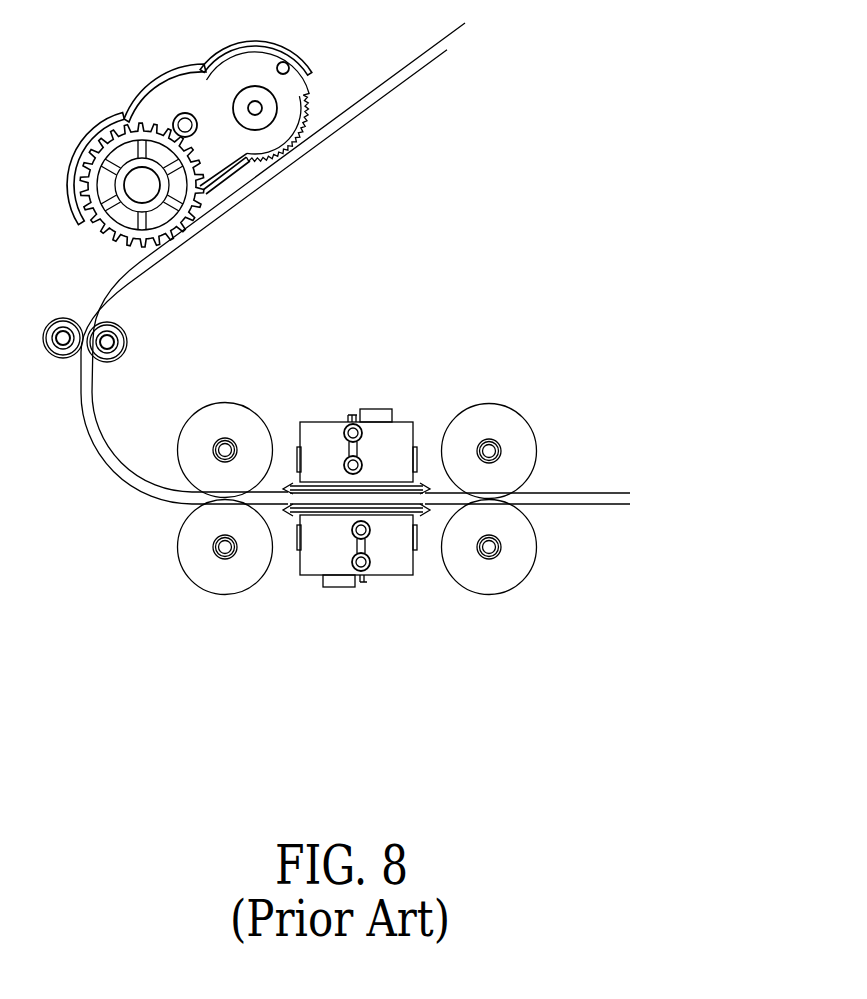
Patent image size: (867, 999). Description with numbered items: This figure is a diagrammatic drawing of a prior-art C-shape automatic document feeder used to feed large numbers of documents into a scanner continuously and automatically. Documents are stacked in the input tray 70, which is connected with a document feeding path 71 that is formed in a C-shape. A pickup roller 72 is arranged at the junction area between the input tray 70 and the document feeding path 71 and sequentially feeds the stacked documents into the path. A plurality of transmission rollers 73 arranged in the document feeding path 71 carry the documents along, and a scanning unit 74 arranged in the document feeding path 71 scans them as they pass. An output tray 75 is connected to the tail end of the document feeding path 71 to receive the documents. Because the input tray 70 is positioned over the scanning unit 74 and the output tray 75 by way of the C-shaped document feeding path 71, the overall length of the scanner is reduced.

The input tray 70 is at (449, 48).
The document feeding path 71 is at (93, 303).
The pickup roller 72 is at (310, 100).
The transmission rollers 73 is at (195, 550).
The scanning unit 74 is at (387, 445).
The output tray 75 is at (630, 498).